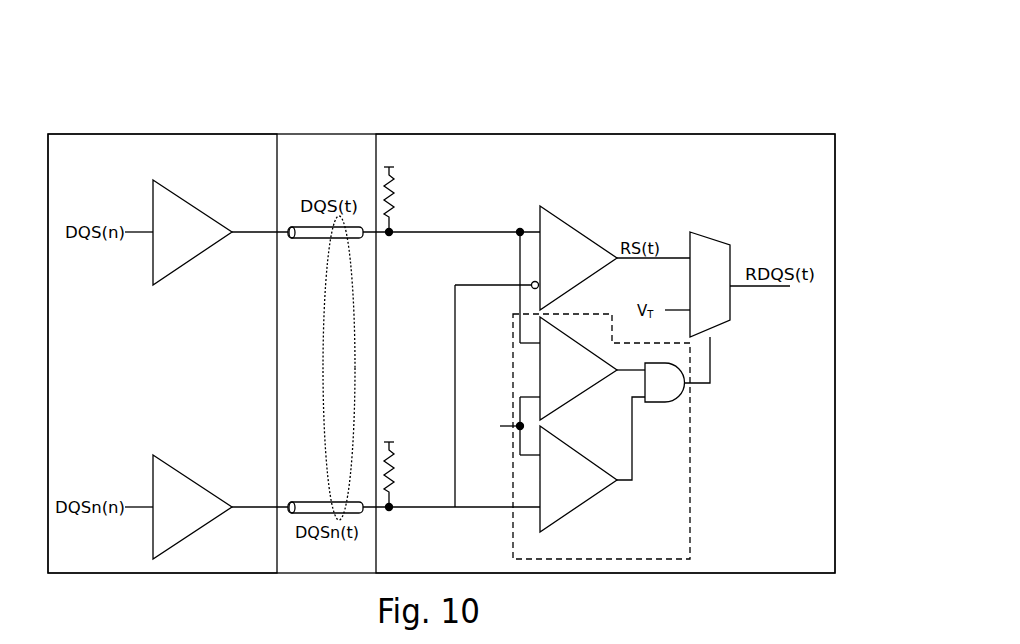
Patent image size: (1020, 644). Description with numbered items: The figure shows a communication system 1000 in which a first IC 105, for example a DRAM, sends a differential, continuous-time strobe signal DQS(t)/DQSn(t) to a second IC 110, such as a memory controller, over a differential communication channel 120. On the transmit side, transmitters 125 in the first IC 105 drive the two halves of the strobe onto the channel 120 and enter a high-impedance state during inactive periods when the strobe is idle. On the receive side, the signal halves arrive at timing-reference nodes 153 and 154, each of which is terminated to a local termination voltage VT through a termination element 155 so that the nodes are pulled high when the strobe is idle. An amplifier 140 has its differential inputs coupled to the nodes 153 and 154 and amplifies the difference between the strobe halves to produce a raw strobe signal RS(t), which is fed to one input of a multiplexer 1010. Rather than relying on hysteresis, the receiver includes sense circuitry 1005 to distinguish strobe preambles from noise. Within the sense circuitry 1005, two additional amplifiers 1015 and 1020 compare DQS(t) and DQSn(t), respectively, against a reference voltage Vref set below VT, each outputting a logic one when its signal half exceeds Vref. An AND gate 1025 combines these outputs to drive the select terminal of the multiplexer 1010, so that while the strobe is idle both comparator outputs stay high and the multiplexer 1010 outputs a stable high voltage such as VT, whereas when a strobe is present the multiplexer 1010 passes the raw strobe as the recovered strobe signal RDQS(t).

The communication system 1000 is at (673, 61).
The first IC 105 is at (243, 159).
The second IC 110 is at (720, 159).
The transmitter 125 is at (188, 529).
The differential communication channel 120 is at (323, 323).
The termination element 155 is at (406, 323).
The timing-reference node 153 is at (389, 236).
The timing-reference node 154 is at (389, 511).
The amplifier 140 is at (578, 280).
The multiplexer 1010 is at (710, 237).
The sense circuitry 1005 is at (680, 555).
The amplifier 1015 is at (585, 380).
The amplifier 1020 is at (587, 490).
The AND gate 1025 is at (665, 403).